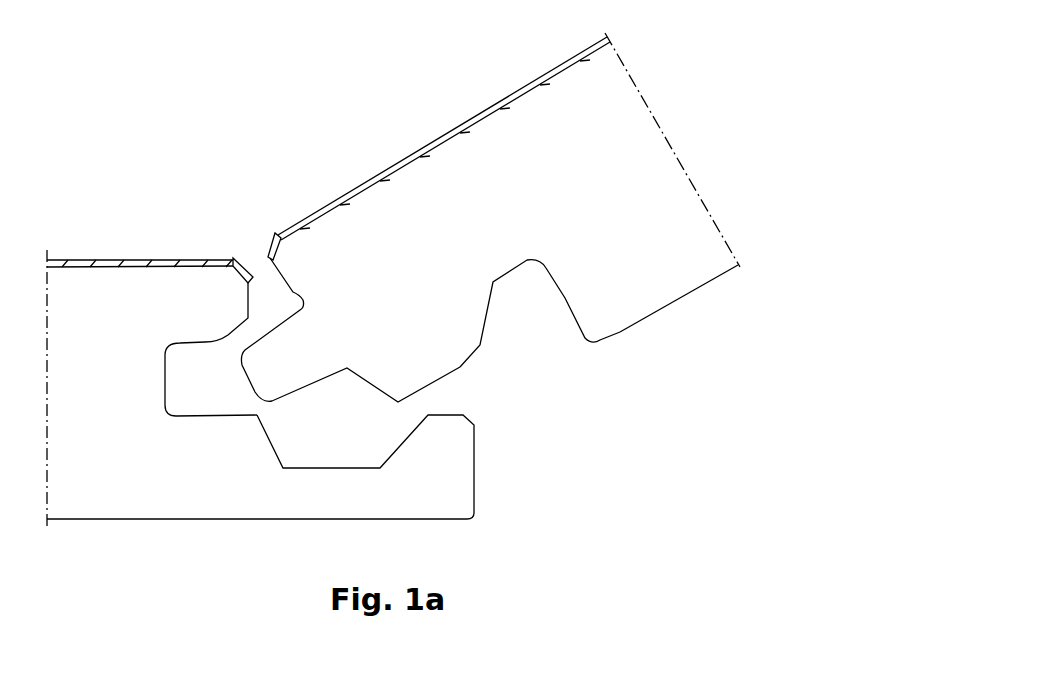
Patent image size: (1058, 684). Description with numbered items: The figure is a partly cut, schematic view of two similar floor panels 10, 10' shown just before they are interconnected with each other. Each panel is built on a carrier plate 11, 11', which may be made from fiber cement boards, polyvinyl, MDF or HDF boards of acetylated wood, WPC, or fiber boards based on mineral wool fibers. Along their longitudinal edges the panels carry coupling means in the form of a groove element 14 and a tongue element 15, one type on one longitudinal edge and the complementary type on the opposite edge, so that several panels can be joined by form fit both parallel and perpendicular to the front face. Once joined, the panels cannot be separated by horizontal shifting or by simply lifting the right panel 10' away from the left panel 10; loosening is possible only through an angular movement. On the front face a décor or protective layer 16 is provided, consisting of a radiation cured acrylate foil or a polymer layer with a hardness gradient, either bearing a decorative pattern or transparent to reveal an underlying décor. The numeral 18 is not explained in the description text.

The floor panel 10 is at (152, 442).
The floor panel 10' is at (496, 236).
The carrier plate 11 is at (409, 489).
The carrier plate 11' is at (715, 182).
The groove element 14 is at (413, 332).
The tongue element 15 is at (207, 498).
The décor or protective layer 16 is at (105, 259).
The edge cap / bevel 18 is at (274, 257).